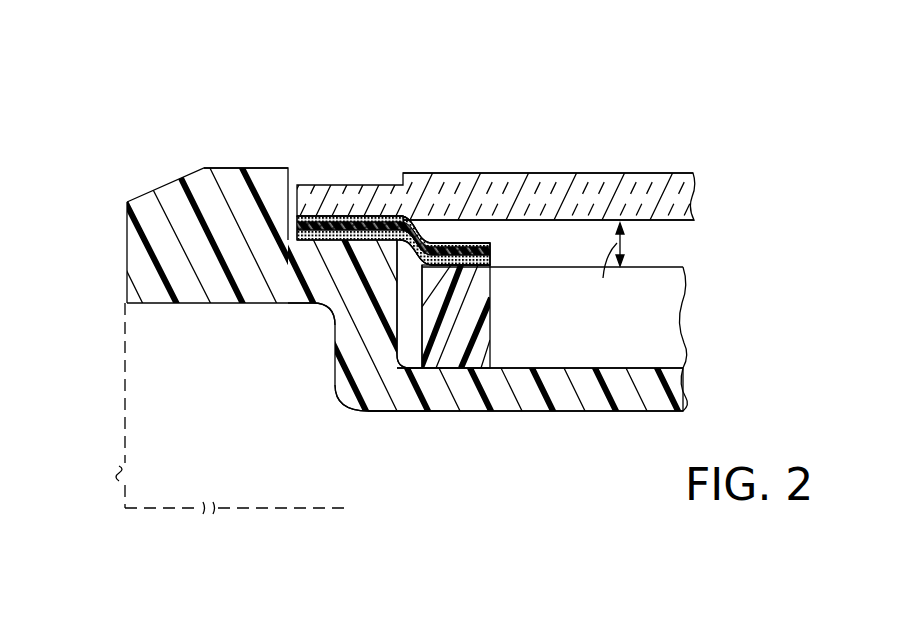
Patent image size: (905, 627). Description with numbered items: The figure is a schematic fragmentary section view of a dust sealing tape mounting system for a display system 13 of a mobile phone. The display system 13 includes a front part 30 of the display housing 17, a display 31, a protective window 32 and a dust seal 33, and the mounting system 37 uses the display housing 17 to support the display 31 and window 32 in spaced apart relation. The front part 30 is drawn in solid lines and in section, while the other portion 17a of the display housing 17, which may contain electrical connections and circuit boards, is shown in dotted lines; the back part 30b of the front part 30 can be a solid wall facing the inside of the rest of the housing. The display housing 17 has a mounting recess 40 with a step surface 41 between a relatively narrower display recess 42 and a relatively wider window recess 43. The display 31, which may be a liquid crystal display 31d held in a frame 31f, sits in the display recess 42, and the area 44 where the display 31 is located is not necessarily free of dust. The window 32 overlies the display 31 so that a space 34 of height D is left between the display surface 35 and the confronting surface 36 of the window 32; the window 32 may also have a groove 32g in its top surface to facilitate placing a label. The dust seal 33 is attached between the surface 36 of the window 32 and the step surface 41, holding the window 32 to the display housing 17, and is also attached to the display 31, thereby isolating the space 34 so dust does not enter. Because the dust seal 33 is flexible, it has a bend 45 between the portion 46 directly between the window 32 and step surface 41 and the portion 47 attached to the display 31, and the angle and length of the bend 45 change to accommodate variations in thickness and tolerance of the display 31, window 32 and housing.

The display system 13 is at (343, 77).
The display housing 17 is at (126, 236).
The other portion of the display housing 17a is at (122, 378).
The front part 30 is at (160, 188).
The back part 30b is at (408, 413).
The display 31 is at (627, 290).
The liquid crystal display 31d is at (556, 354).
The frame 31f is at (487, 355).
The protective window 32 is at (617, 173).
The groove 32g is at (327, 218).
The dust seal 33 is at (457, 240).
The space 34 is at (574, 263).
The display surface 35 is at (668, 266).
The surface of the window 36 is at (683, 222).
The mounting system 37 is at (262, 146).
The mounting recess 40 is at (323, 148).
The step surface 41 is at (336, 218).
The display recess 42 is at (427, 222).
The window recess 43 is at (362, 186).
The area 44 is at (397, 335).
The bend 45 is at (404, 324).
The portion 46 is at (298, 305).
The portion 47 is at (360, 398).